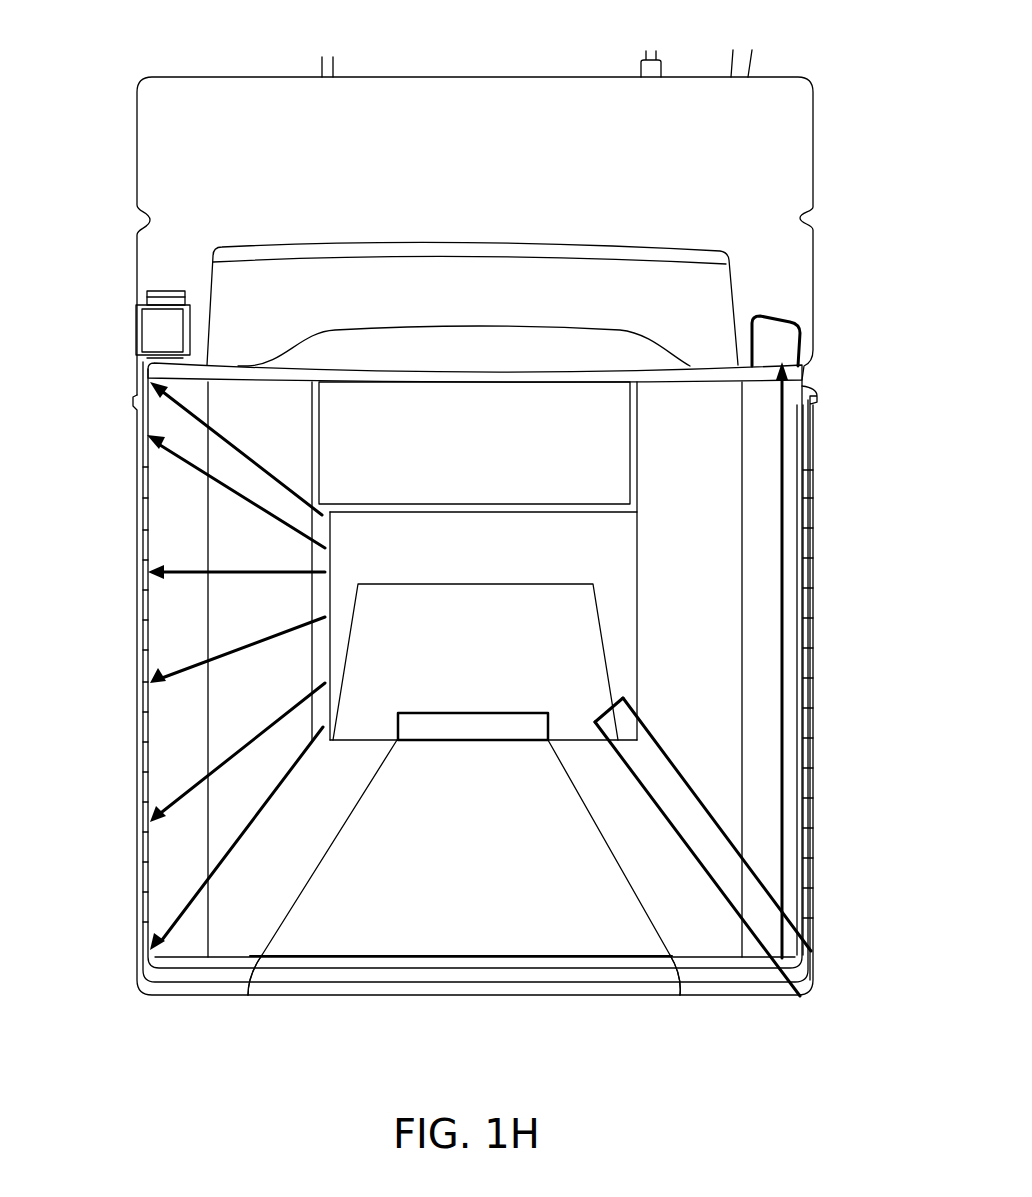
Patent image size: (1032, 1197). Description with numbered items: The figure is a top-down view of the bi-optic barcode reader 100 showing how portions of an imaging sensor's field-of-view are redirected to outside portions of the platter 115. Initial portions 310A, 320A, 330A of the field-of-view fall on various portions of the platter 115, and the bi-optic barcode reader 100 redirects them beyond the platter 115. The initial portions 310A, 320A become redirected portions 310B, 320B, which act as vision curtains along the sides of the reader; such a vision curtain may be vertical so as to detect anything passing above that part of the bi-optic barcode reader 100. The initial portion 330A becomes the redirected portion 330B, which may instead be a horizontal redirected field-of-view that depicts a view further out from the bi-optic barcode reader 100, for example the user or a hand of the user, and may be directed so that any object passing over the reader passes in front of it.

The bi-optic barcode reader 100 is at (197, 38).
The platter 115 is at (475, 505).
The initial portion 310A is at (323, 683).
The redirected portion 310B is at (140, 608).
The initial portion 320A is at (472, 732).
The redirected portion 320B is at (475, 997).
The initial portion 330A is at (625, 727).
The redirected portion 330B is at (790, 957).